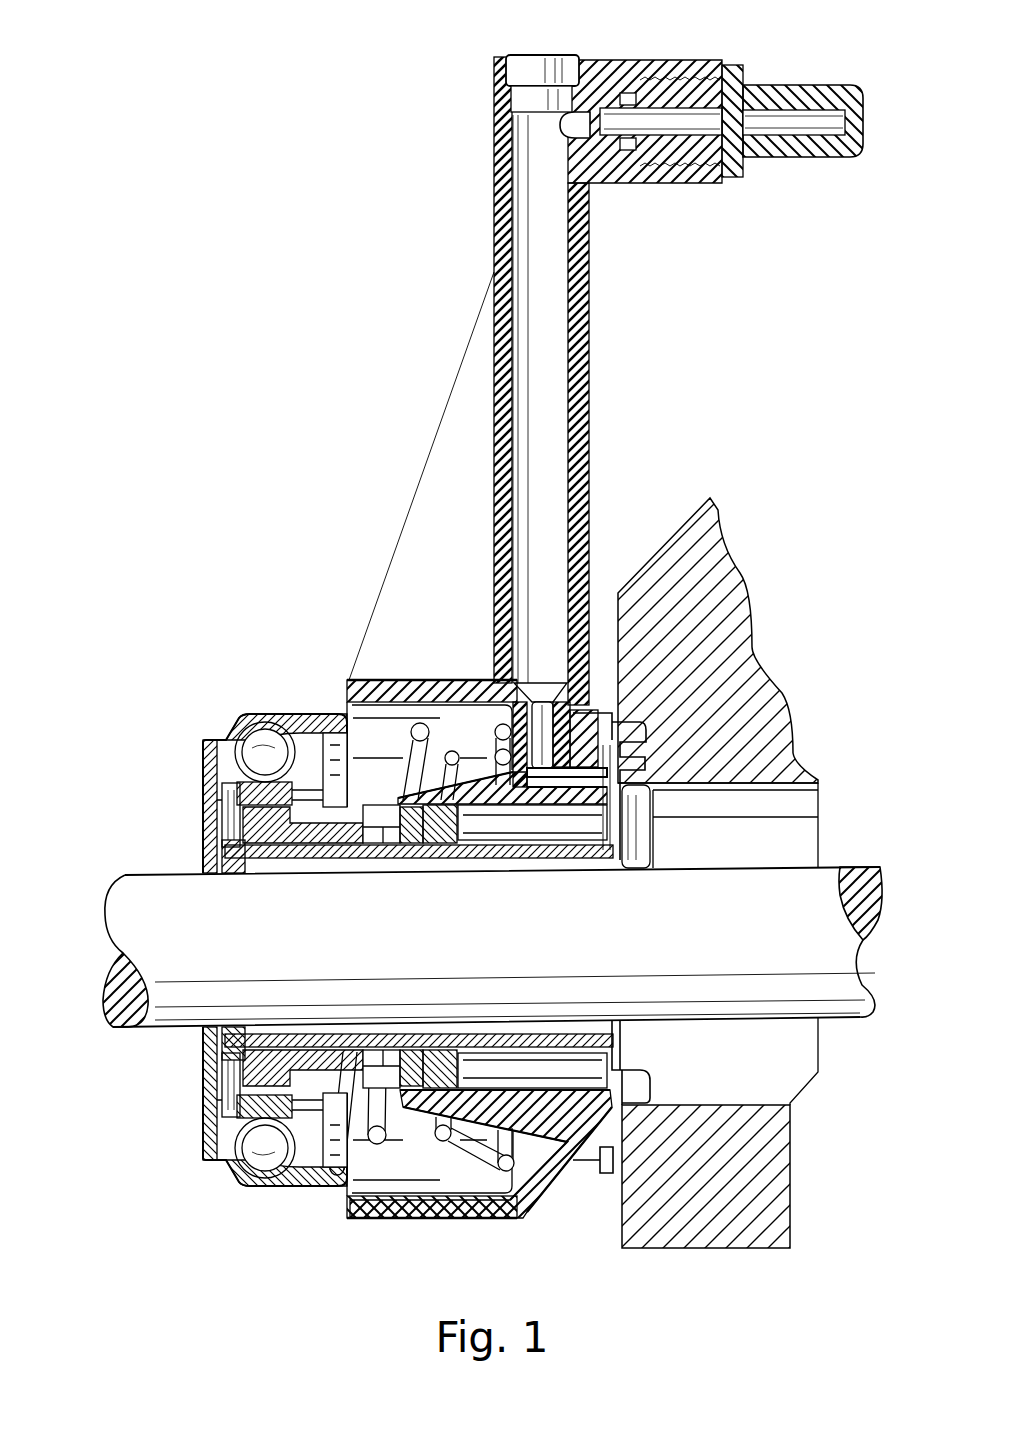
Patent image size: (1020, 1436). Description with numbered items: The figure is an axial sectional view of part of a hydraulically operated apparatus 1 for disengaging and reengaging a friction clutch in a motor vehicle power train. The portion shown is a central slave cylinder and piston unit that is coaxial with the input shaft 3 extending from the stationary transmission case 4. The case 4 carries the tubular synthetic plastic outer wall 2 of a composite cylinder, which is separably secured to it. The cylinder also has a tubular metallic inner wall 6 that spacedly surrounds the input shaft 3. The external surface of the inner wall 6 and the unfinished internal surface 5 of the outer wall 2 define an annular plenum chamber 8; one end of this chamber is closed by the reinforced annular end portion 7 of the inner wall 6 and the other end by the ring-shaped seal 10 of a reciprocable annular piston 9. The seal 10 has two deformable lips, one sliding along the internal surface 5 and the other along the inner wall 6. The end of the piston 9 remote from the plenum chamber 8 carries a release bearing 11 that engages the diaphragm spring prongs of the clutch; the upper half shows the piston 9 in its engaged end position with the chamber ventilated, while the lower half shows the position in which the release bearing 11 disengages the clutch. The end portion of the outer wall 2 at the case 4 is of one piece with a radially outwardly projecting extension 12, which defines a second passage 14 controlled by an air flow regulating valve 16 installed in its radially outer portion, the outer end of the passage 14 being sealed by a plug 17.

The hydraulically operated apparatus 1 is at (215, 700).
The outer wall 2 is at (350, 686).
The input shaft 3 is at (670, 930).
The transmission case 4 is at (722, 638).
The internal surface 5 is at (566, 1080).
The inner wall 6 is at (232, 856).
The annular end portion 7 is at (650, 1088).
The plenum chamber 8 is at (521, 1060).
The piston 9 is at (345, 1050).
The seal 10 is at (425, 1055).
The release bearing 11 is at (265, 1150).
The extension 12 is at (608, 428).
The second passage 14 is at (548, 377).
The air flow regulating valve 16 is at (775, 90).
The plug 17 is at (540, 68).